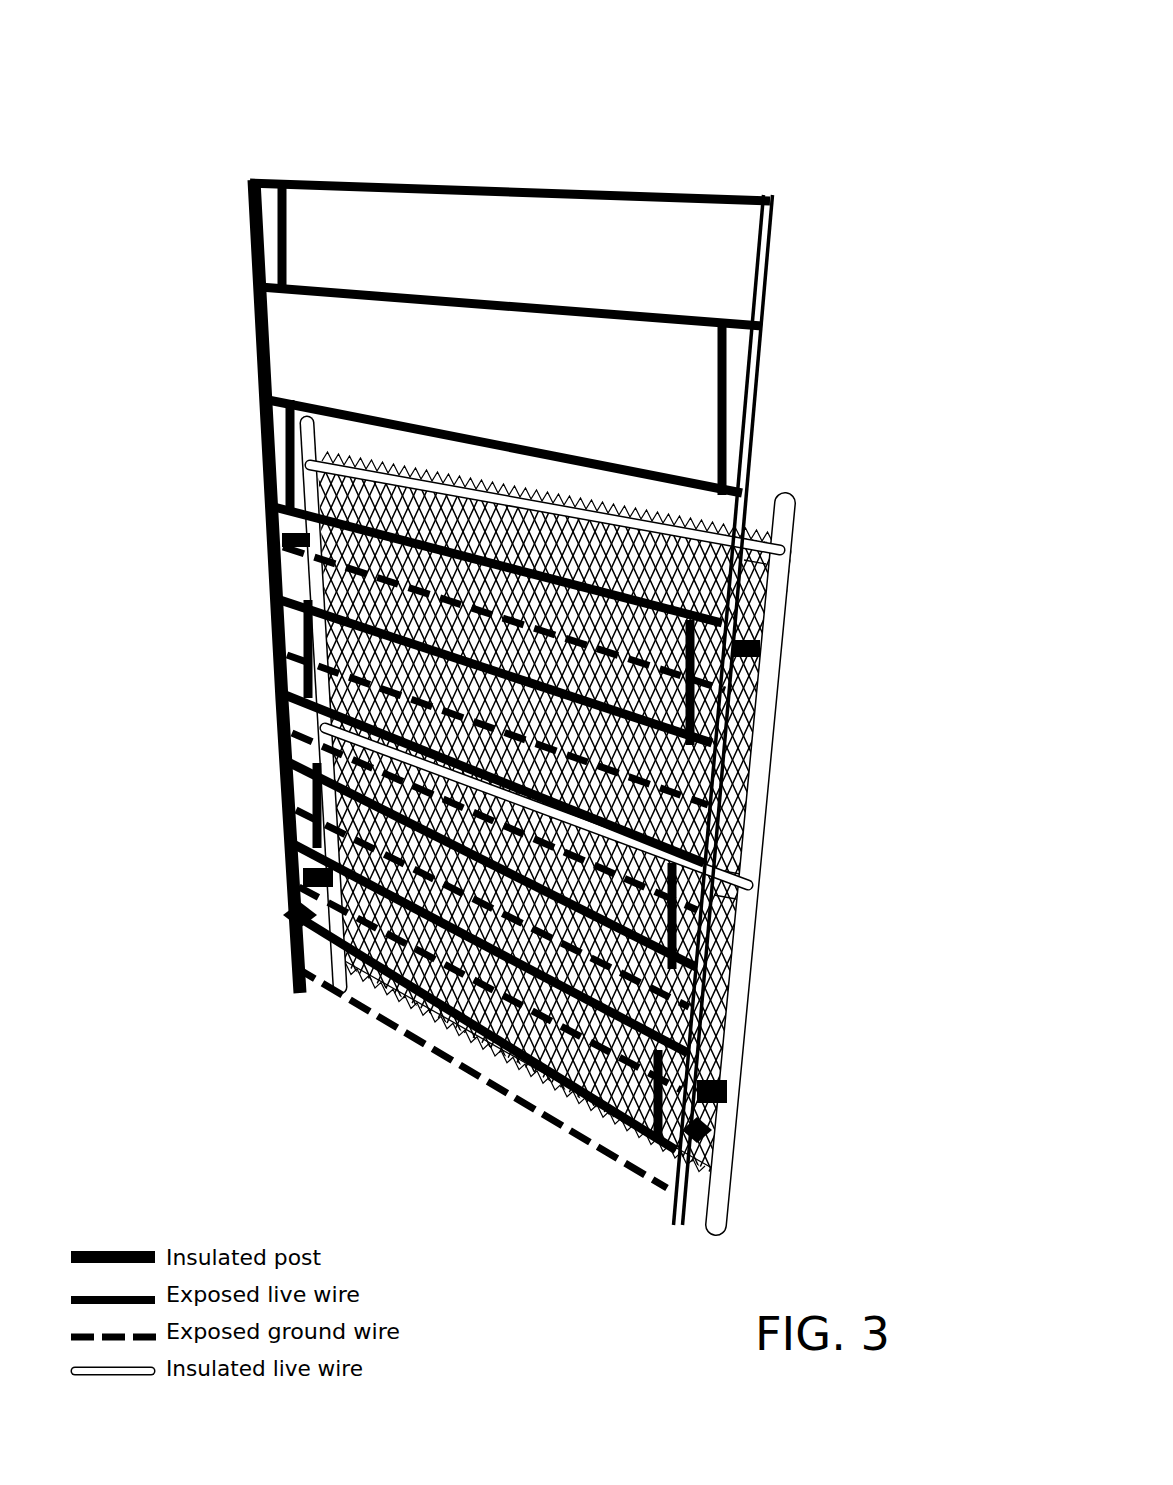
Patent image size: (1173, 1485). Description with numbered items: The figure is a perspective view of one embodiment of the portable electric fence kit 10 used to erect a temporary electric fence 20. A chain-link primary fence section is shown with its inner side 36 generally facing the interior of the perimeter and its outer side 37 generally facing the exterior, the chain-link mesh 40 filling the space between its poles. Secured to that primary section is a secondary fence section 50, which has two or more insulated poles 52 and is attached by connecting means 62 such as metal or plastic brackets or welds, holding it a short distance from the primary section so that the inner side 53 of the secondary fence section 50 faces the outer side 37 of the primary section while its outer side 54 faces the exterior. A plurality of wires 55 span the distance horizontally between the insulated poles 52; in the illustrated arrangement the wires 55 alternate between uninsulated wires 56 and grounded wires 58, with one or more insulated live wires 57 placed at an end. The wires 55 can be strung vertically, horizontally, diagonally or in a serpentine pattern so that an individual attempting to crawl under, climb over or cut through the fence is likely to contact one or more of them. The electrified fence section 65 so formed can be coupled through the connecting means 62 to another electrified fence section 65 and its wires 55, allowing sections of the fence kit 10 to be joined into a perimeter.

The portable electric fence kit 10 is at (788, 170).
The temporary electric fence 20 is at (212, 812).
The inner side 36 is at (315, 583).
The outer side 37 is at (775, 738).
The chain-link mesh 40 is at (440, 485).
The secondary fence section 50 is at (672, 155).
The insulated pole 52 is at (252, 248).
The inner side 53 is at (265, 437).
The outer side 54 is at (770, 870).
The wires 55 is at (410, 997).
The uninsulated wire 56 is at (362, 182).
The insulated wire 57 is at (758, 417).
The grounded wire 58 is at (295, 735).
The connecting means 62 is at (290, 540).
The electrified fence section 65 is at (205, 372).